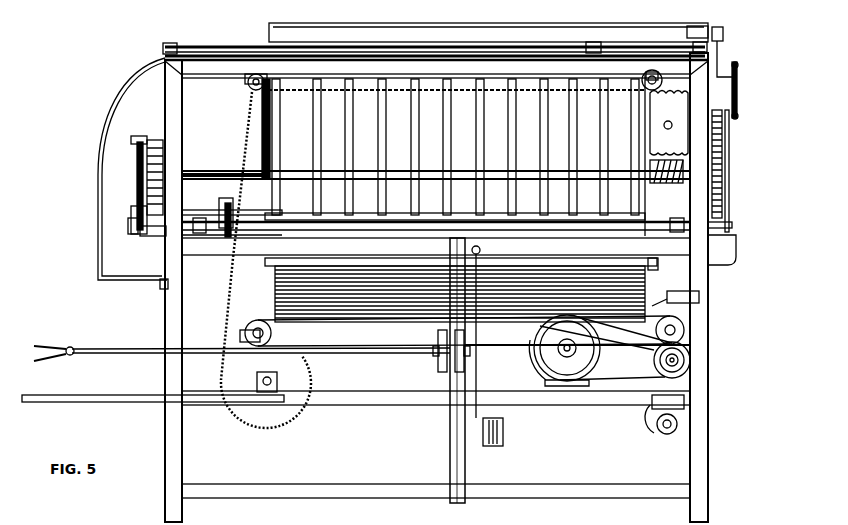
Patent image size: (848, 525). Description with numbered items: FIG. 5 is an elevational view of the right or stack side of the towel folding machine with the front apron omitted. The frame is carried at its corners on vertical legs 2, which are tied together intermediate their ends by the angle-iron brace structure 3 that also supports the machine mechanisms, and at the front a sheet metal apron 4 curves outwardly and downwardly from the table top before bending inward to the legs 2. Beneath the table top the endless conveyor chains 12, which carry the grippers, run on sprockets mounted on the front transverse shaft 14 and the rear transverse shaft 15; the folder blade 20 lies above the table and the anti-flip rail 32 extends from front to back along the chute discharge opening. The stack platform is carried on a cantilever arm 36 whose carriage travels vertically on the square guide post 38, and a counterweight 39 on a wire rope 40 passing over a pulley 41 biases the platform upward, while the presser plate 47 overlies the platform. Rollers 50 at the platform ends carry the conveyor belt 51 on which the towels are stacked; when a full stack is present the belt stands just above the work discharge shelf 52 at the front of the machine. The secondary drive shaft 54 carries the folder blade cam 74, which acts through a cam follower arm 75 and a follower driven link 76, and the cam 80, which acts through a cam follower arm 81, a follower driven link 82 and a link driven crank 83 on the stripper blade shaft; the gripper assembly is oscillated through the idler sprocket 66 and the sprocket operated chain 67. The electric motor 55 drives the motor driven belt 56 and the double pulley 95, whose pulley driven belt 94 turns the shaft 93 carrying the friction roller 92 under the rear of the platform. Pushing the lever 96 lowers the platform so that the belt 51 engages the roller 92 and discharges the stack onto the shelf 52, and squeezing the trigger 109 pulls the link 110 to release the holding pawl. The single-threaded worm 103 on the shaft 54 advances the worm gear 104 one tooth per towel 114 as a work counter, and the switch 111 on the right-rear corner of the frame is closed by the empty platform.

The vertical legs 2 is at (708, 447).
The brace structure 3 is at (575, 405).
The sheet metal apron 4 is at (110, 112).
The endless conveyor chains 12 is at (396, 95).
The front transverse shaft 14 is at (247, 88).
The rear transverse shaft 15 is at (650, 90).
The folder blade 20 is at (468, 30).
The anti-flip rail 32 is at (385, 227).
The cantilever arm 36 is at (440, 368).
The vertical post 38 is at (450, 447).
The counterweight 39 is at (498, 440).
The wire rope 40 is at (482, 356).
The pulley 41 is at (480, 254).
The presser plate 47 is at (656, 268).
The rollers 50 is at (260, 320).
The conveyor belt 51 is at (500, 340).
The work discharge shelf 52 is at (66, 402).
The secondary drive shaft 54 is at (203, 178).
The electric motor 55 is at (597, 343).
The motor driven belt 56 is at (628, 400).
The idler sprocket 66 is at (298, 380).
The sprocket operated chain 67 is at (230, 272).
The folder blade cam 74 is at (722, 145).
The cam follower arm 75 is at (728, 202).
The follower driven link 76 is at (738, 103).
The cam 80 is at (156, 140).
The cam follower arm 81 is at (142, 140).
The follower driven link 82 is at (134, 190).
The link driven crank 83 is at (148, 236).
The friction roller 92 is at (660, 437).
The shaft 93 is at (678, 424).
The pulley driven belt 94 is at (686, 403).
The double pulley 95 is at (690, 374).
The lever 96 is at (46, 350).
The worm 103 is at (678, 186).
The worm gear 104 is at (683, 149).
The trigger 109 is at (44, 358).
The link 110 is at (160, 355).
The switch 111 is at (700, 297).
The towel 114 is at (335, 305).